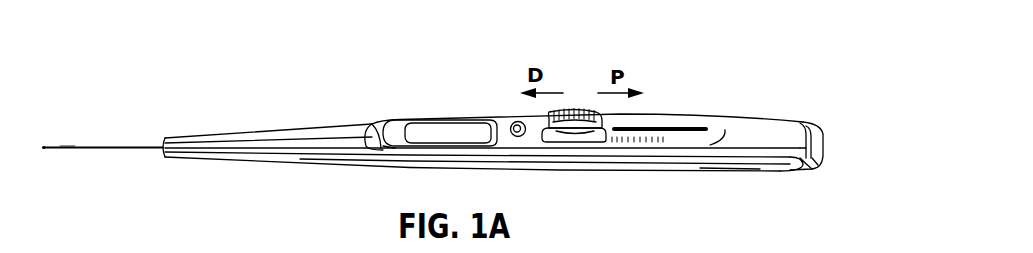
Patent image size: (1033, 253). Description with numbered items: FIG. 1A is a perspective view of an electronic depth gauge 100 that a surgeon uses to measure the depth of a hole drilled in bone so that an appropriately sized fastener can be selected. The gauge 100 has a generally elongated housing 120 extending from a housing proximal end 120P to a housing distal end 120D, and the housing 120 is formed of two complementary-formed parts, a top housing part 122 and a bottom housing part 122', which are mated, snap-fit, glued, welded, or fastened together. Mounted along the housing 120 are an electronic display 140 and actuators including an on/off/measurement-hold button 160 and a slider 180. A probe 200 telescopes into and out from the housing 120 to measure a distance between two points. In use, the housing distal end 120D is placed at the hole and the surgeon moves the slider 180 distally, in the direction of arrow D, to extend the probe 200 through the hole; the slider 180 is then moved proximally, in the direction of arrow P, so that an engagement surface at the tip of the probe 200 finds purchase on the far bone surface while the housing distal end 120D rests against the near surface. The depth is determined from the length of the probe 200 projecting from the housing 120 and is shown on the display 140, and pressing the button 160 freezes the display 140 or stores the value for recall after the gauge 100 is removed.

The electronic depth gauge 100 is at (722, 43).
The generally elongated housing 120 is at (357, 131).
The housing proximal end 120P is at (162, 137).
The housing distal end 120D is at (808, 178).
The top housing part 122 is at (787, 120).
The bottom housing part 122' is at (730, 199).
The electronic display 140 is at (437, 134).
The on/off/measurement-hold button 160 is at (514, 122).
The slider 180 is at (573, 110).
The probe 200 is at (143, 143).